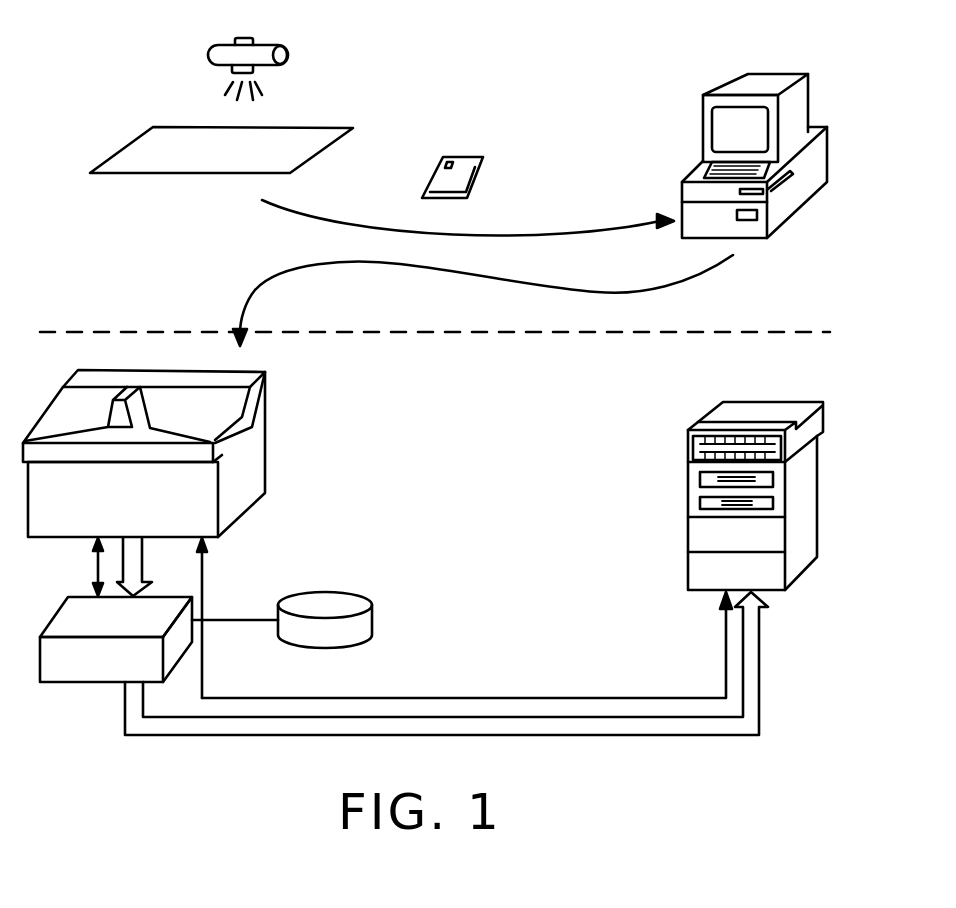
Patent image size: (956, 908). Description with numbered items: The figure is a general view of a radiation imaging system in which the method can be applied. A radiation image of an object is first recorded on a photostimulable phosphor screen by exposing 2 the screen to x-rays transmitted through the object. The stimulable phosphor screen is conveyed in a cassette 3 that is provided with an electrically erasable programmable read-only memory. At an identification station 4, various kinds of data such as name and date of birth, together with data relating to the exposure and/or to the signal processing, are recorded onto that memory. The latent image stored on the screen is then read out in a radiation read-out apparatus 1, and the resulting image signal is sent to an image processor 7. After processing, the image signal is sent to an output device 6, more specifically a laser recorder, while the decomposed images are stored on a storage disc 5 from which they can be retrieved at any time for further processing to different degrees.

The radiation read-out apparatus 1 is at (60, 413).
The exposing 2 is at (253, 53).
The cassette 3 is at (463, 162).
The identification station 4 is at (805, 192).
The storage disc 5 is at (343, 600).
The output device 6 is at (797, 565).
The image processor 7 is at (178, 647).